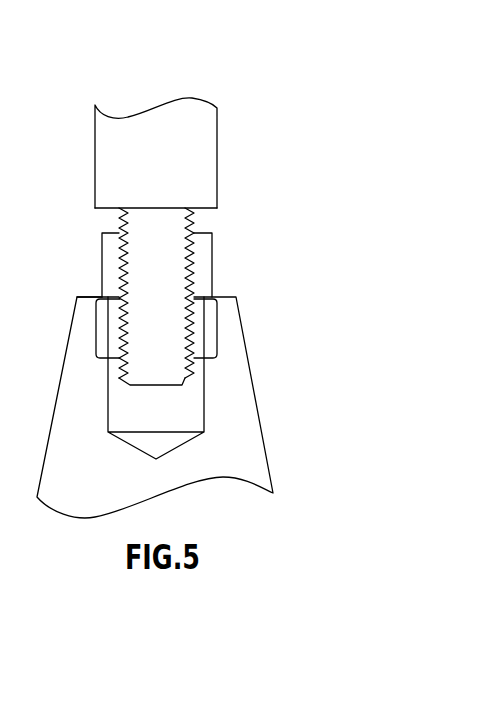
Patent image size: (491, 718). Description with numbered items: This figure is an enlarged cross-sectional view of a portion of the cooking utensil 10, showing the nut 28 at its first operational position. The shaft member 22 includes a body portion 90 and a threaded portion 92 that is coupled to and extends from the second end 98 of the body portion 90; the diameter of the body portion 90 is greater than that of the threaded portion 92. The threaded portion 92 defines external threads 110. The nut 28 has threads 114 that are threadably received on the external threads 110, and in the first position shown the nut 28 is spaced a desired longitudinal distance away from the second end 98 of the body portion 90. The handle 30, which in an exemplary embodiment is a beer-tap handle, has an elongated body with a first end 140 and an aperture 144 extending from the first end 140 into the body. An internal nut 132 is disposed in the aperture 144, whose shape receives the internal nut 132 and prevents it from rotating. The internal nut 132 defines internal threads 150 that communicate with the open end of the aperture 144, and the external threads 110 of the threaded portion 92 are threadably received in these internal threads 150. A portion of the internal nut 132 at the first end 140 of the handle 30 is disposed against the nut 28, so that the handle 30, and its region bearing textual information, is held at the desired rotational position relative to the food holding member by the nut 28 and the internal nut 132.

The cooking utensil 10 is at (152, 62).
The shaft member 22 is at (219, 170).
The body portion 90 is at (217, 137).
The second end 98 is at (109, 208).
The threaded portion 92 is at (163, 276).
The external threads 110 is at (196, 213).
The threads 114 is at (110, 262).
The nut 28 is at (212, 250).
The handle 30 is at (268, 460).
The first end 140 is at (88, 297).
The aperture 144 is at (218, 335).
The internal threads 150 is at (118, 335).
The internal nut 132 is at (205, 325).